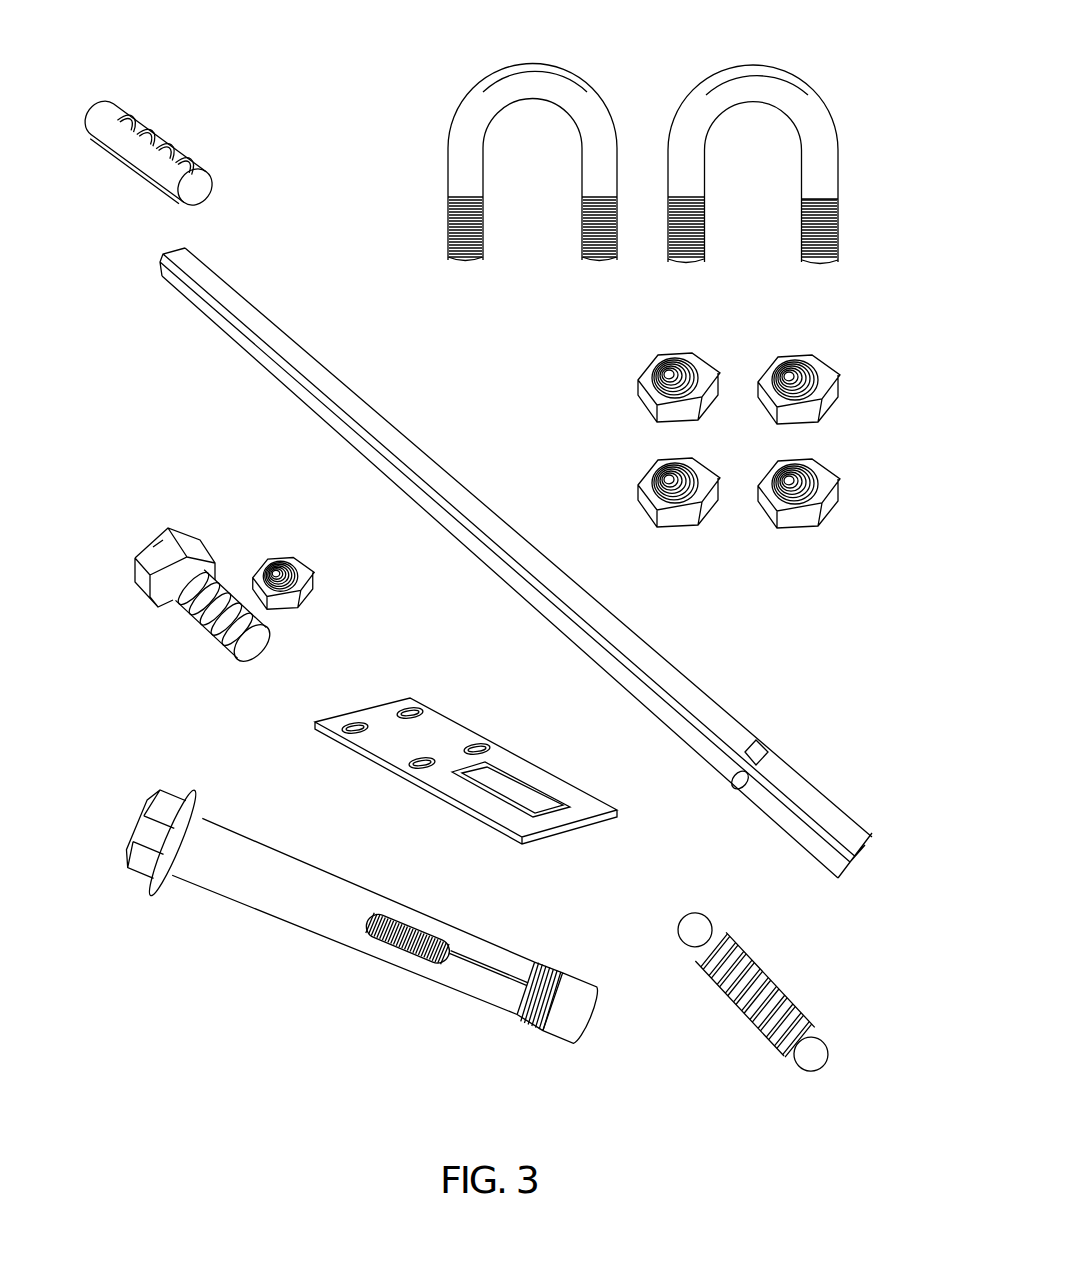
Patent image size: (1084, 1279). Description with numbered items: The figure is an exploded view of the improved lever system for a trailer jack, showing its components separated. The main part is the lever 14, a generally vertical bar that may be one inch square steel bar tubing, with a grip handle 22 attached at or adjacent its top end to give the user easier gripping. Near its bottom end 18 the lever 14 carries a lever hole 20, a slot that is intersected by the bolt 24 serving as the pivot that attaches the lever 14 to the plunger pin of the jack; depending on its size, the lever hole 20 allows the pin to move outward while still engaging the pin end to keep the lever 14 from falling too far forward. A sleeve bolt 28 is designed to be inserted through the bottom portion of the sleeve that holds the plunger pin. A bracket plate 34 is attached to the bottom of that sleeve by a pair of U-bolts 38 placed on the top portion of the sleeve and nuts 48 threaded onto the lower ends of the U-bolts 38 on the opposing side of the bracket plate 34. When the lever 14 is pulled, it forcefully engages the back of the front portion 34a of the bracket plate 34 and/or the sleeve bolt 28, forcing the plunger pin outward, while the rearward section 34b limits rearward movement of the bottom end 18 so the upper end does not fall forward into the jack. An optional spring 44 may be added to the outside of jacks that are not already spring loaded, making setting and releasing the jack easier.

The lever 14 is at (377, 425).
The bottom end 18 is at (772, 757).
The lever hole 20 is at (800, 783).
The grip handle 22 is at (214, 170).
The bolt 24 is at (170, 528).
The sleeve bolt 28 is at (258, 888).
The bracket plate 34 is at (506, 738).
The front portion 34a is at (440, 743).
The rearward section 34b is at (558, 817).
The U-bolts 38 is at (687, 110).
The spring 44 is at (748, 1027).
The nuts 48 is at (760, 382).